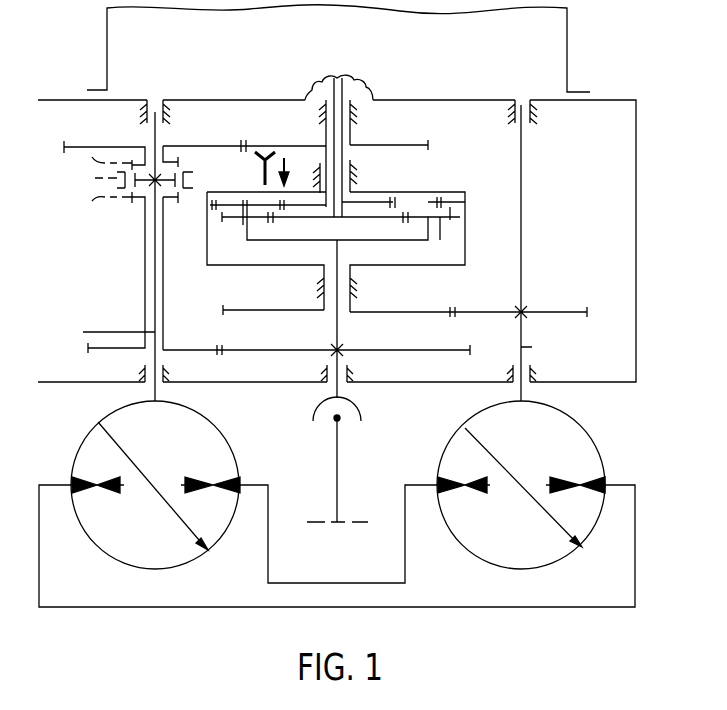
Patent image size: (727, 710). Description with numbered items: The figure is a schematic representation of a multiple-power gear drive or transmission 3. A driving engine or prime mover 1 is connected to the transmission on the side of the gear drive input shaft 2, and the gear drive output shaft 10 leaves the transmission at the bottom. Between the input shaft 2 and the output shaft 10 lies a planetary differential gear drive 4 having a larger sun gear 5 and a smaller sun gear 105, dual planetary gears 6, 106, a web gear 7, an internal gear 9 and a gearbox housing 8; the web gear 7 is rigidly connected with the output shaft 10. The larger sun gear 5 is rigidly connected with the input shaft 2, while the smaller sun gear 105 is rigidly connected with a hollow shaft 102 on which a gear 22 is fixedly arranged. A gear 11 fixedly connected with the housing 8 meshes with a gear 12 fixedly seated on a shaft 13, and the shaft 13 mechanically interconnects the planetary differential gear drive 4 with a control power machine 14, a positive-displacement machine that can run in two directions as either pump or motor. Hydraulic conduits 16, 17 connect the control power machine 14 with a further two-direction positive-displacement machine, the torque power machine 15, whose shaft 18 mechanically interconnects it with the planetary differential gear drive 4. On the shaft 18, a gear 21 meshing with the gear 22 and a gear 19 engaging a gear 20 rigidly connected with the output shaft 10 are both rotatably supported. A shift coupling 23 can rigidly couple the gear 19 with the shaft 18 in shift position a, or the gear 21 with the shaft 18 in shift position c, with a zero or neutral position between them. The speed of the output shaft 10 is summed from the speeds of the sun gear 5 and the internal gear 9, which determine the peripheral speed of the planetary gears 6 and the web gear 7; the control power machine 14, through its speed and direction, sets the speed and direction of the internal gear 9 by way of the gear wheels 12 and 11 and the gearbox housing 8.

The driving engine 1 is at (218, 41).
The gear drive input shaft 2 is at (345, 97).
The multiple-power gear drive 3 is at (611, 107).
The planetary differential gear drive 4 is at (447, 250).
The larger sun gear 5 is at (367, 216).
The planetary gear 6 is at (440, 217).
The web gear 7 is at (402, 243).
The gearbox housing 8 is at (467, 263).
The internal gear 9 is at (467, 208).
The gear drive output shaft 10 is at (341, 393).
The gear 11 is at (398, 313).
The gear 12 is at (552, 310).
The shaft 13 is at (532, 347).
The control power machine 14 is at (585, 428).
The torque power machine 15 is at (93, 425).
The hydraulic conduit 16 is at (204, 607).
The hydraulic conduit 17 is at (270, 552).
The shaft 18 is at (106, 256).
The gear 19 is at (127, 348).
The gear 20 is at (277, 340).
The gear 21 is at (78, 146).
The gear 22 is at (270, 146).
The shift coupling 23 is at (185, 179).
The hollow shaft 102 is at (350, 133).
The smaller sun gear 105 is at (388, 200).
The planetary gear 106 is at (440, 205).